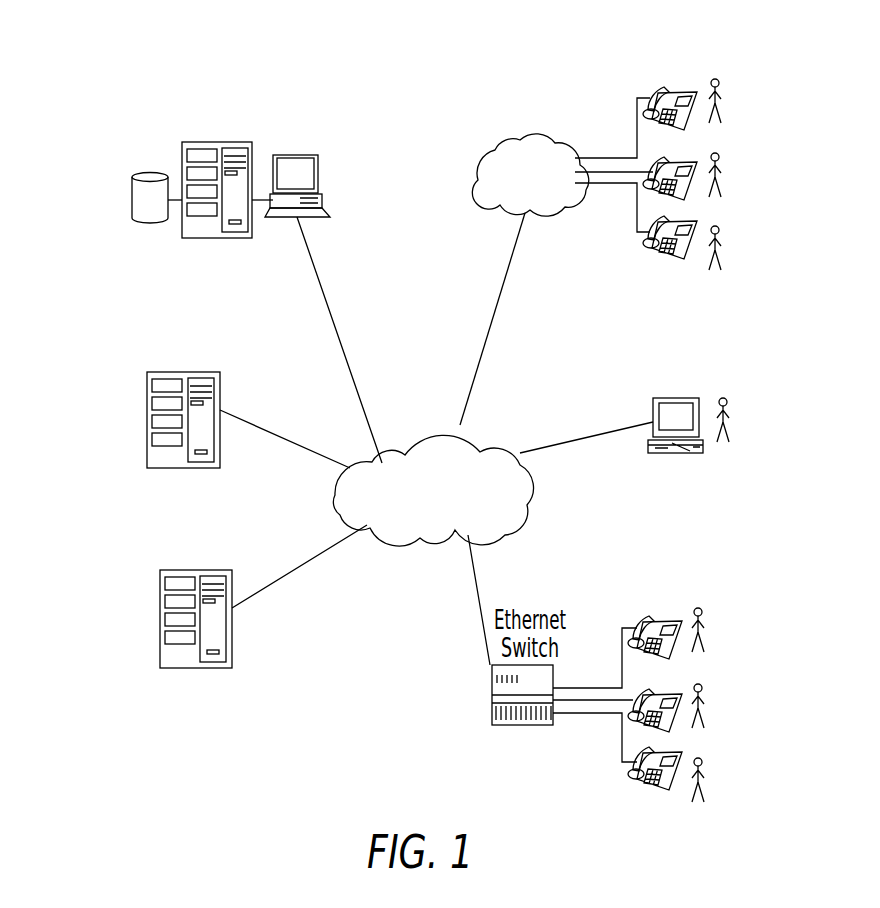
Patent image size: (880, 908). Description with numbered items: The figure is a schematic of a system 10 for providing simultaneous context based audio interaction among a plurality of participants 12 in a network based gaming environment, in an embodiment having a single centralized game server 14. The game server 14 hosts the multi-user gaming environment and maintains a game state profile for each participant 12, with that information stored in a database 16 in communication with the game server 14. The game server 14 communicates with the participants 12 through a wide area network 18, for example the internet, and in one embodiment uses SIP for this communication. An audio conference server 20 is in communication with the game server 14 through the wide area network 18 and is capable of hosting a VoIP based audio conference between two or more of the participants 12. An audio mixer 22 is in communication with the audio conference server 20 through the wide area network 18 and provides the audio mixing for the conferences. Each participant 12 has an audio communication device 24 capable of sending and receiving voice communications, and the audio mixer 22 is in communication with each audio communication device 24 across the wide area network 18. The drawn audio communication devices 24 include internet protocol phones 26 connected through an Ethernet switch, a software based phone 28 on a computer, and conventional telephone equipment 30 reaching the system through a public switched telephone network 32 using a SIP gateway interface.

The system 10 is at (394, 108).
The participant 12 is at (725, 97).
The game server 14 is at (235, 142).
The database 16 is at (132, 202).
The wide area network 18 is at (416, 540).
The audio conference server 20 is at (147, 414).
The audio mixer 22 is at (160, 611).
The audio communication device 24 is at (653, 95).
The internet protocol phone 26 is at (668, 617).
The software based phone 28 is at (687, 454).
The conventional telephone equipment 30 is at (691, 85).
The public switched telephone network 32 is at (506, 150).